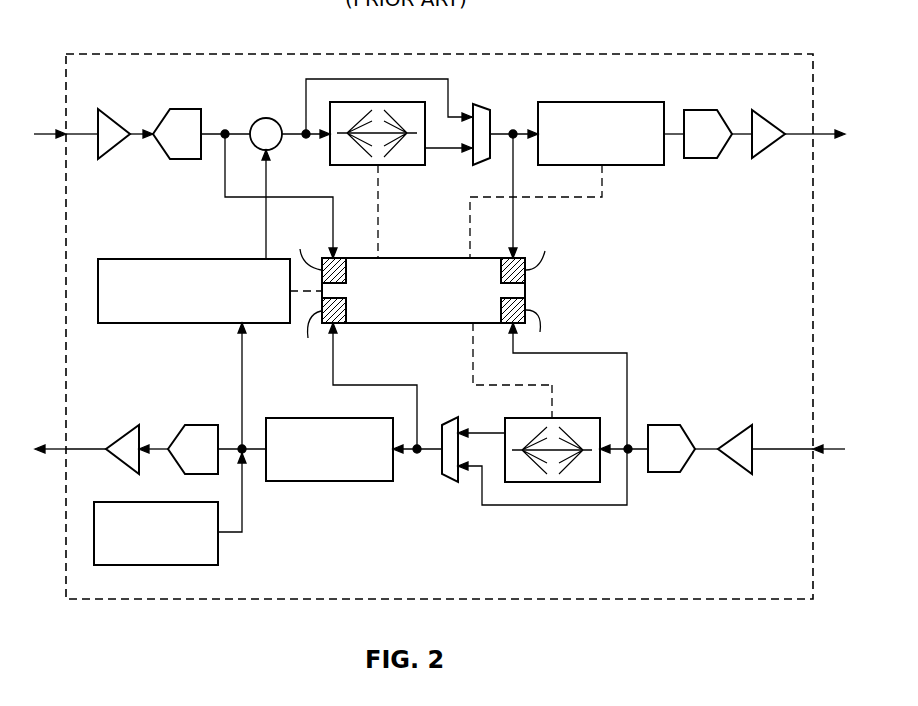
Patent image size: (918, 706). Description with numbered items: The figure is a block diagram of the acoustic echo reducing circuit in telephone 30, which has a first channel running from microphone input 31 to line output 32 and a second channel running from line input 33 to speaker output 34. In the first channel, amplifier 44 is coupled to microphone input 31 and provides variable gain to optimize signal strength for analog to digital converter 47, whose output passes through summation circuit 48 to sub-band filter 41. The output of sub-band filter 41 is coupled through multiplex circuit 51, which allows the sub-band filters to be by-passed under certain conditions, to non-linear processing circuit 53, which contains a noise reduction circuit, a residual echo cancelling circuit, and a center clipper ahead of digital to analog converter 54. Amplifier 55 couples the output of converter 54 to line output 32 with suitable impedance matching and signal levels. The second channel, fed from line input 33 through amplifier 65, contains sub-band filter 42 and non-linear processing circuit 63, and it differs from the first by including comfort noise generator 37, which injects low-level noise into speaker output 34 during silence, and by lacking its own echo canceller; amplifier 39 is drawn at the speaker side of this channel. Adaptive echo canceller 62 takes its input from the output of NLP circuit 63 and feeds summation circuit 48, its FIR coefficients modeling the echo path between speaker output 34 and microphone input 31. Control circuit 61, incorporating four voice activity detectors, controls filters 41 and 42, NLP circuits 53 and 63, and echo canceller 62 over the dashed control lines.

The telephone 30 is at (195, 32).
The microphone input 31 is at (41, 133).
The line output 32 is at (820, 133).
The line input 33 is at (818, 448).
The speaker output 34 is at (60, 448).
The comfort noise generator 37 is at (160, 566).
The output amplifier 39 is at (122, 425).
The sub-band filter 41 is at (368, 166).
The sub-band filter 42 is at (565, 417).
The amplifier 44 is at (118, 109).
The analog to digital converter 47 is at (187, 109).
The summation circuit 48 is at (261, 118).
The multiplex circuit 51 is at (491, 88).
The non-linear processing circuit 53 is at (600, 102).
The digital to analog converter 54 is at (700, 109).
The amplifier 55 is at (772, 109).
The control circuit 61 is at (450, 257).
The adaptive echo canceller 62 is at (178, 258).
The non-linear processing circuit 63 is at (365, 482).
The amplifier 65 is at (735, 475).